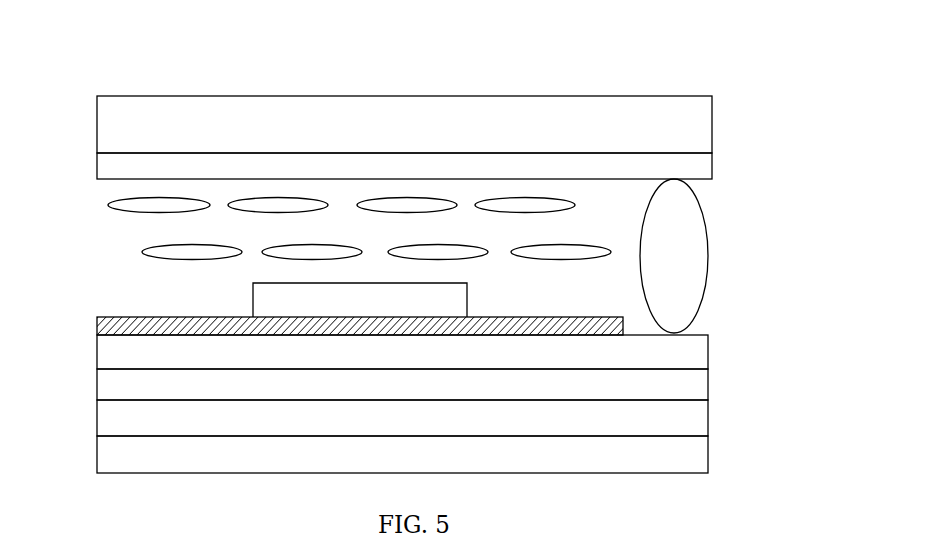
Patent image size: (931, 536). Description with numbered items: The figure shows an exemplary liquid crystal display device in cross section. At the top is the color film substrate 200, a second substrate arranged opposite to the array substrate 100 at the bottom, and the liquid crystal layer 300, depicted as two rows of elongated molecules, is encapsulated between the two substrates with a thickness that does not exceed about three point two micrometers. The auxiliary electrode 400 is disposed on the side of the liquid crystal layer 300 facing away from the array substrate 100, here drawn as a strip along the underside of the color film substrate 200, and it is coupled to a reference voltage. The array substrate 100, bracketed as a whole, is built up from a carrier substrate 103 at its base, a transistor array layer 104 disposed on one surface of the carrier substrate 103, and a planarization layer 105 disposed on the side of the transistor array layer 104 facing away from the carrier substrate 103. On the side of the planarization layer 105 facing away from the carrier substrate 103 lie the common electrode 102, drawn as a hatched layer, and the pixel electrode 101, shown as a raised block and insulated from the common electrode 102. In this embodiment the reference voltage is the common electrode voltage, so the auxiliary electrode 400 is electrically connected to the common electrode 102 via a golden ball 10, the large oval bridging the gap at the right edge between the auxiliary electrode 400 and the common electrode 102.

The color film substrate 200 is at (668, 130).
The auxiliary electrode 400 is at (673, 168).
The liquid crystal layer 300 is at (155, 239).
The golden ball 10 is at (673, 255).
The pixel electrode 101 is at (444, 306).
The array substrate 100 is at (409, 377).
The common electrode 102 is at (680, 355).
The planarization layer 105 is at (680, 391).
The transistor array layer 104 is at (685, 423).
The carrier substrate 103 is at (690, 458).